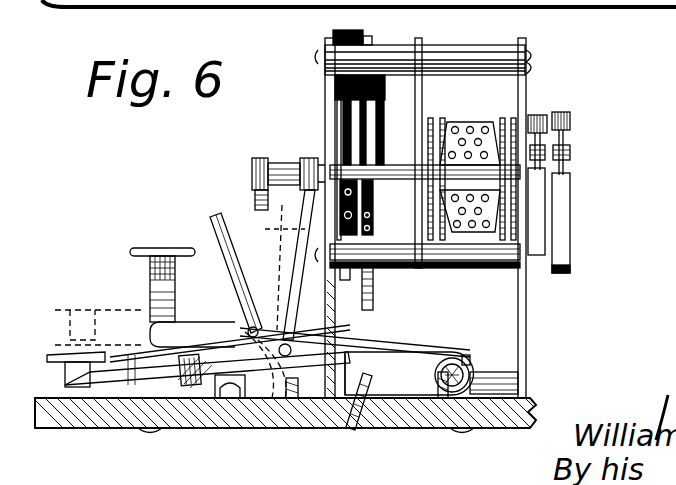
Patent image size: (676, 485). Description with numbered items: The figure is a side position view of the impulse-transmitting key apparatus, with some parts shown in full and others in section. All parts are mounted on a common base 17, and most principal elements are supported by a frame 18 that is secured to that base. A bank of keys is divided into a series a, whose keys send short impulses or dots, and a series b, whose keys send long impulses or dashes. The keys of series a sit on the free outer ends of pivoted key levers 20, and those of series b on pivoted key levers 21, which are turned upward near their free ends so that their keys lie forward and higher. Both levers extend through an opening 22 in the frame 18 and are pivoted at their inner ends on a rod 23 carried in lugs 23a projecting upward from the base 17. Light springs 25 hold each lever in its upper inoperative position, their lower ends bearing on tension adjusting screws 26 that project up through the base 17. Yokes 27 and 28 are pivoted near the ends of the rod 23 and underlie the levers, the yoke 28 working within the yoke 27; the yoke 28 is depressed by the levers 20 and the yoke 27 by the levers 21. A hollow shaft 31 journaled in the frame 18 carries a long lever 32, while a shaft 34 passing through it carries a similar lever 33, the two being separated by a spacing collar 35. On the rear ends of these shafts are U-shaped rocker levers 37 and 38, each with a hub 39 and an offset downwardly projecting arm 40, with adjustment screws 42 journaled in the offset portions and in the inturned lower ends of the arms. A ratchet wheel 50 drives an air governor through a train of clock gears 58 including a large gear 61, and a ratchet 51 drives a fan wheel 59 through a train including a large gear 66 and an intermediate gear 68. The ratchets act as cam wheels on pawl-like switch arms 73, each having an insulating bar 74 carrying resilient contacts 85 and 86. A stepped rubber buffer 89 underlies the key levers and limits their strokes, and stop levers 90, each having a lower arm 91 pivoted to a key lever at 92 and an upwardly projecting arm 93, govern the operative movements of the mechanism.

The base 17 is at (536, 412).
The frame 18 is at (535, 88).
The key lever 20 is at (128, 355).
The key lever 21 is at (190, 322).
The opening 22 is at (327, 325).
The rod 23 is at (470, 375).
The lug 23a is at (470, 352).
The light spring 25 is at (433, 360).
The tension adjusting screw 26 is at (328, 378).
The yoke 27 is at (262, 376).
The yoke 28 is at (318, 396).
The hollow shaft 31 is at (410, 188).
The lever 32 is at (324, 160).
The lever 33 is at (262, 200).
The shaft 34 is at (552, 180).
The spacing collar 35 is at (285, 168).
The rocker lever 37 is at (538, 216).
The rocker lever 38 is at (562, 200).
The hub 39 is at (566, 164).
The arm 40 is at (568, 236).
The adjustment screw 42 is at (537, 140).
The ratchet wheel 50 is at (350, 280).
The ratchet 51 is at (350, 273).
The train of clock gears 58 is at (535, 86).
The fan wheel 59 is at (475, 124).
The large gear 61 is at (513, 117).
The large gear 66 is at (443, 124).
The intermediate gear 68 is at (430, 118).
The pawl-like switch arm 73 is at (337, 143).
The bar 74 is at (384, 153).
The resilient contact 85 is at (345, 115).
The resilient contact 86 is at (368, 146).
The rubber buffer 89 is at (366, 29).
The stop lever 90 is at (214, 230).
The lower arm 91 is at (256, 326).
The pivot 92 is at (258, 326).
The upwardly projecting arm 93 is at (300, 228).
The series of keys a is at (48, 355).
The series of keys b is at (140, 246).